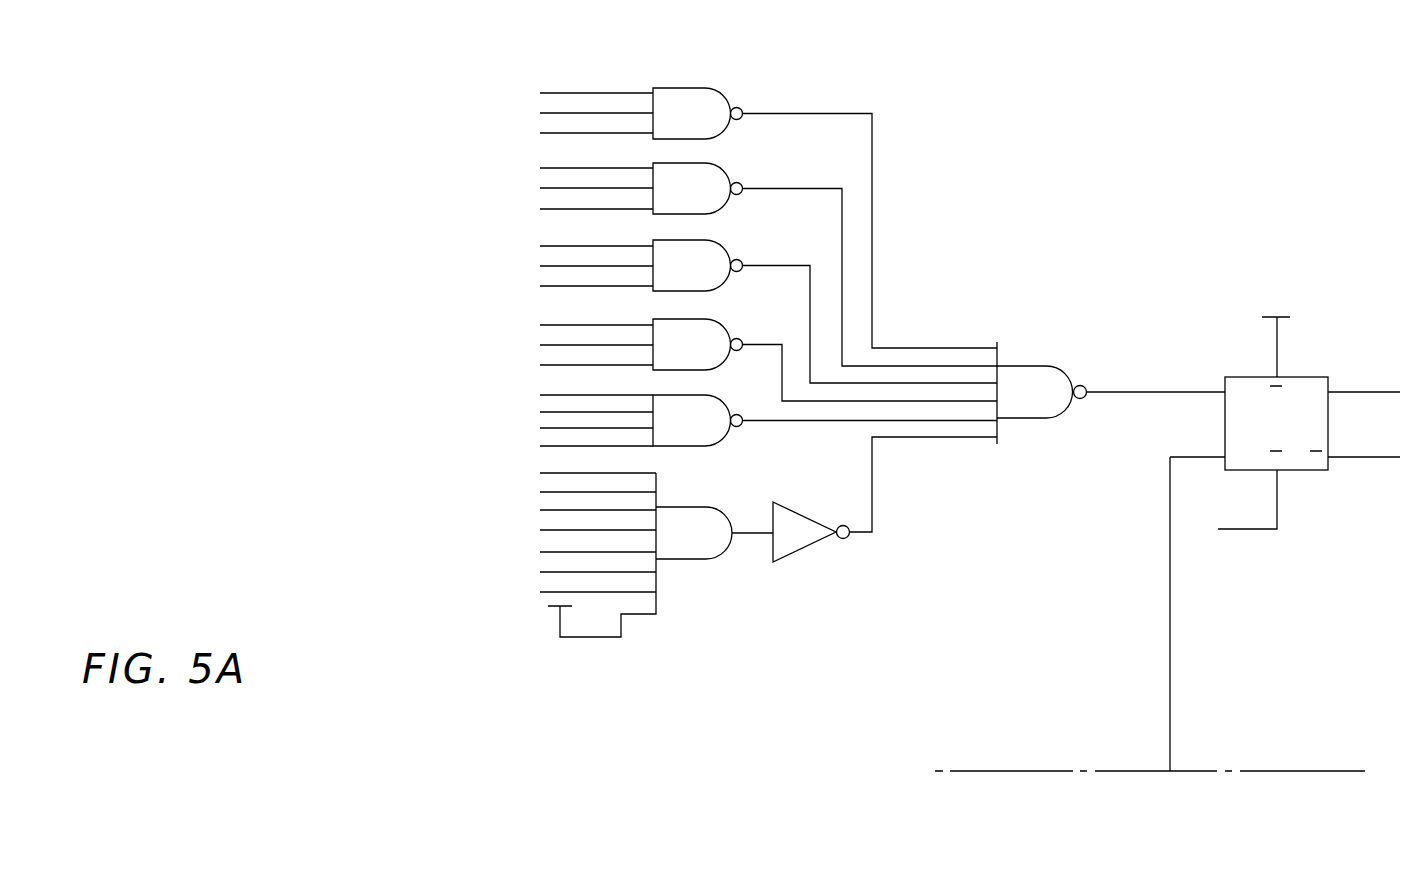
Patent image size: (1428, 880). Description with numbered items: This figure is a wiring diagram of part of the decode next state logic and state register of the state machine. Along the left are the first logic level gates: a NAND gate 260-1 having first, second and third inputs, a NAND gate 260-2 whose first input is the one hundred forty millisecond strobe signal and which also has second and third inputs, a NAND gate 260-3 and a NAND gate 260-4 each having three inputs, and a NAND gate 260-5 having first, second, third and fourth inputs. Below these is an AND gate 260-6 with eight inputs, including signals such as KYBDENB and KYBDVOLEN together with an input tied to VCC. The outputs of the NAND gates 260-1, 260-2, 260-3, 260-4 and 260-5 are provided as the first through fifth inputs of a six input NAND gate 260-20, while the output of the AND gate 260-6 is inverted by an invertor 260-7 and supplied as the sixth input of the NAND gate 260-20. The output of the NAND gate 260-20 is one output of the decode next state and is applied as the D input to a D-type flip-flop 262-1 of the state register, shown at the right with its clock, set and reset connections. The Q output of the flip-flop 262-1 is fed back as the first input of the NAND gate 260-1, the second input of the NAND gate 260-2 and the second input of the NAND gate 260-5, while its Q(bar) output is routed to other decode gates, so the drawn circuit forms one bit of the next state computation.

The NAND gate 260-1 is at (712, 88).
The NAND gate 260-2 is at (718, 164).
The NAND gate 260-3 is at (712, 241).
The NAND gate 260-4 is at (705, 319).
The NAND gate 260-5 is at (710, 447).
The AND gate 260-6 is at (692, 560).
The invertor 260-7 is at (795, 550).
The six input NAND gate 260-20 is at (1028, 366).
The D-type flip-flop 262-1 is at (1295, 376).